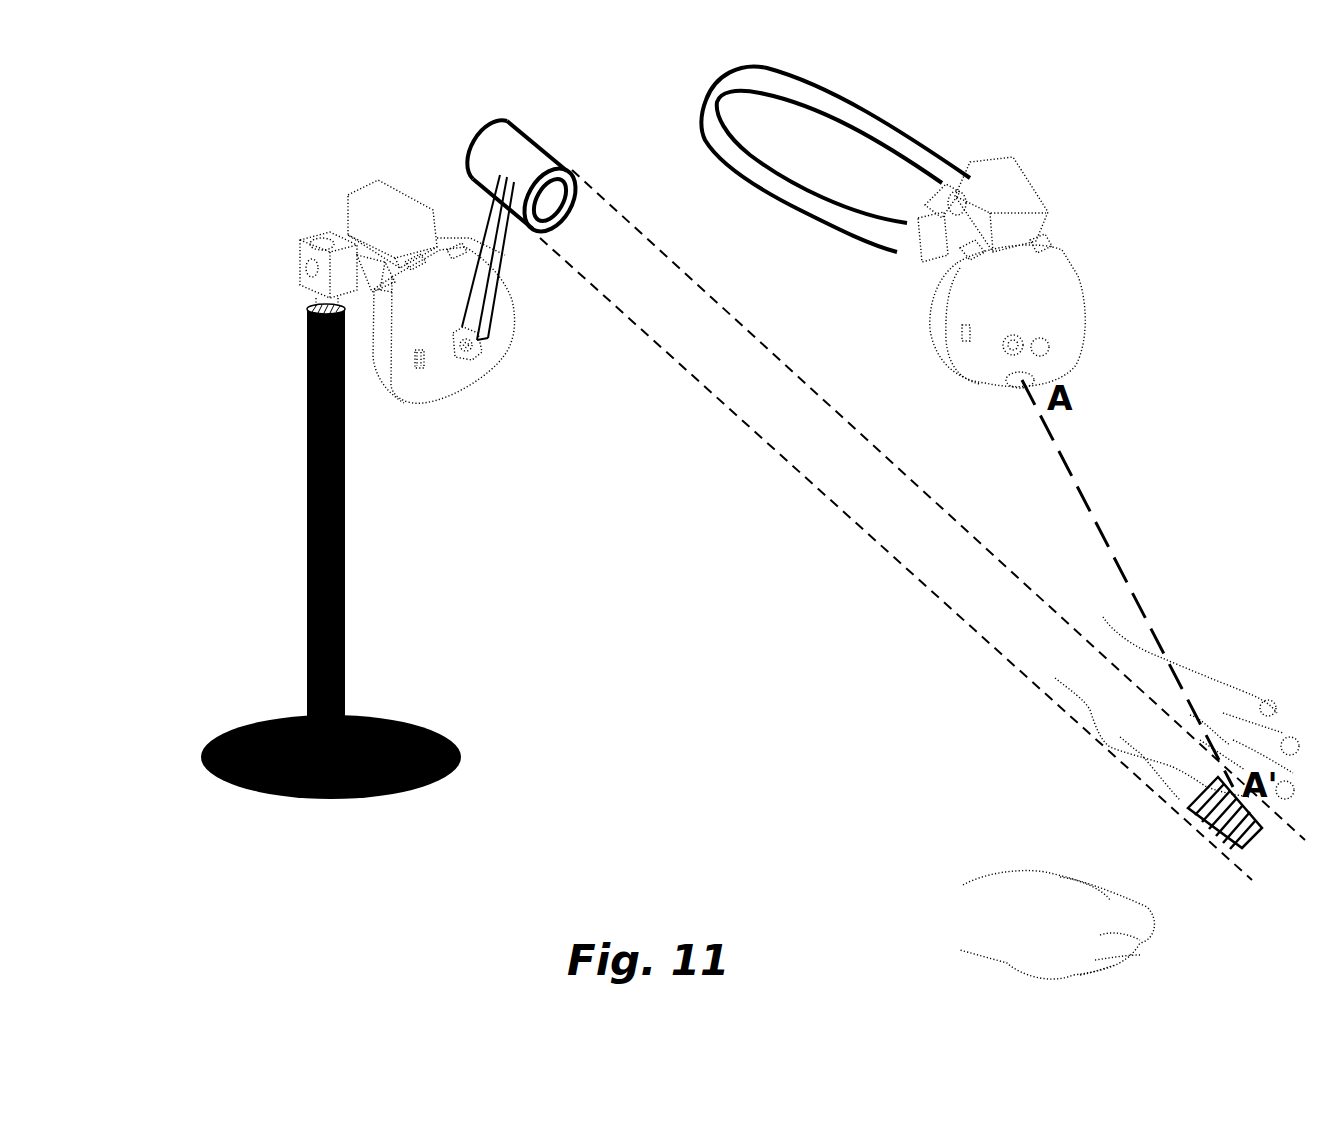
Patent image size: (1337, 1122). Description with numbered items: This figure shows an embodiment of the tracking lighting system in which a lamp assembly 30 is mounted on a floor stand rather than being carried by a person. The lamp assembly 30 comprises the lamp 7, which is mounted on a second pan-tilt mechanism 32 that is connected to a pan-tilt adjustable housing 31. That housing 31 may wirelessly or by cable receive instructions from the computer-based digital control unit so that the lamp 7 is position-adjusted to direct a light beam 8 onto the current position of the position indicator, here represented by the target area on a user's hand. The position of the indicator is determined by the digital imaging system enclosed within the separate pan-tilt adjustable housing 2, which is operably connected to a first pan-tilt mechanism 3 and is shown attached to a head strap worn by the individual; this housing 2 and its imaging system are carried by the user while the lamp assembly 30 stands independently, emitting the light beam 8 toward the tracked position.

The pan-tilt adjustable housing 2 is at (1088, 322).
The first pan-tilt mechanism 3 is at (1012, 192).
The lamp 7 is at (556, 152).
The light beam 8 is at (825, 497).
The lamp assembly 30 is at (482, 408).
The pan-tilt adjustable housing 31 is at (492, 370).
The second pan-tilt mechanism 32 is at (378, 228).